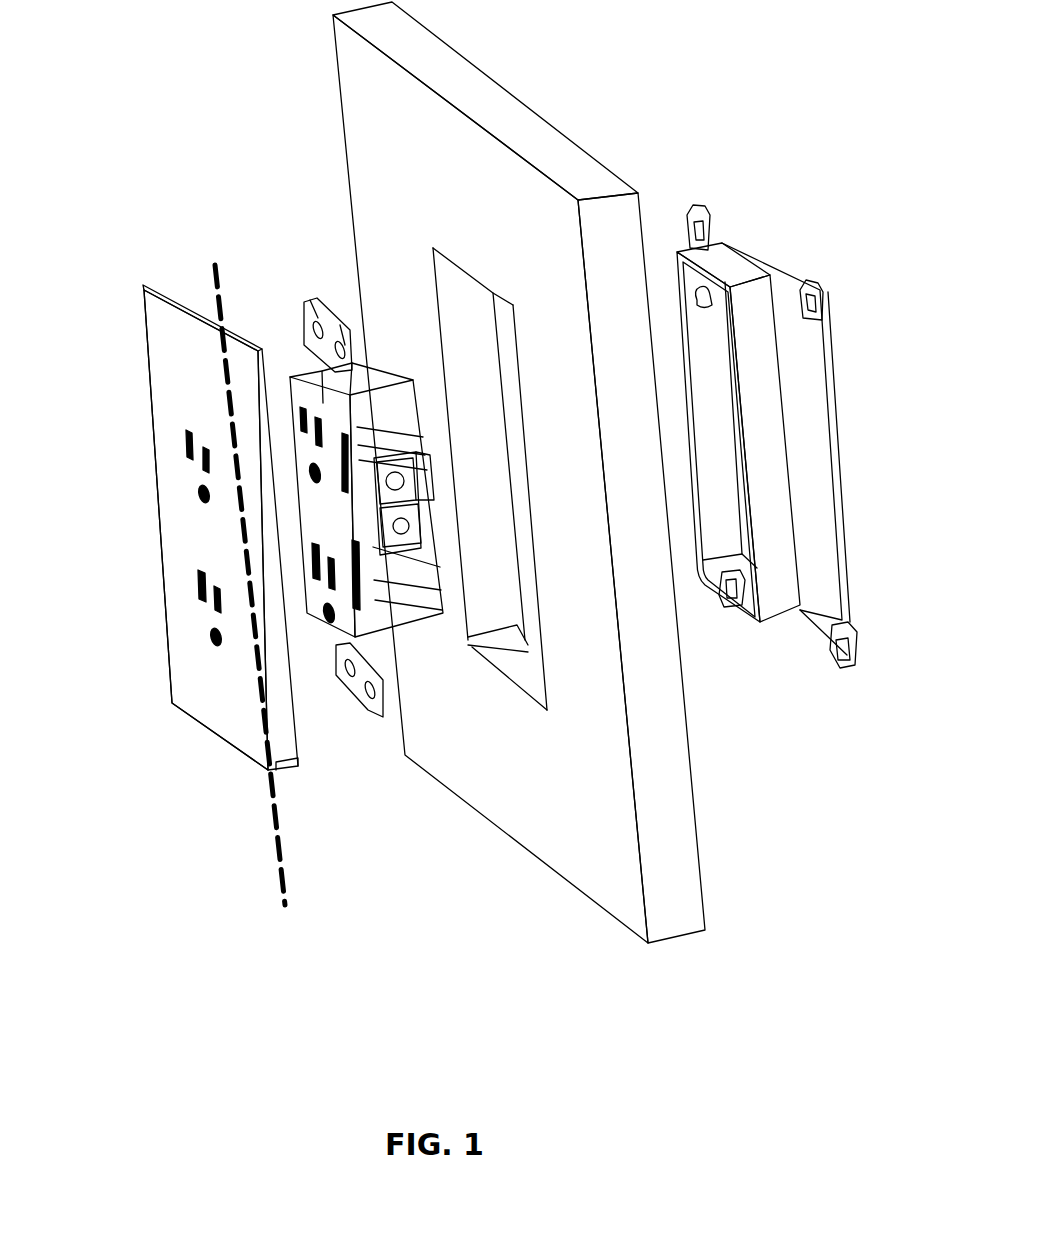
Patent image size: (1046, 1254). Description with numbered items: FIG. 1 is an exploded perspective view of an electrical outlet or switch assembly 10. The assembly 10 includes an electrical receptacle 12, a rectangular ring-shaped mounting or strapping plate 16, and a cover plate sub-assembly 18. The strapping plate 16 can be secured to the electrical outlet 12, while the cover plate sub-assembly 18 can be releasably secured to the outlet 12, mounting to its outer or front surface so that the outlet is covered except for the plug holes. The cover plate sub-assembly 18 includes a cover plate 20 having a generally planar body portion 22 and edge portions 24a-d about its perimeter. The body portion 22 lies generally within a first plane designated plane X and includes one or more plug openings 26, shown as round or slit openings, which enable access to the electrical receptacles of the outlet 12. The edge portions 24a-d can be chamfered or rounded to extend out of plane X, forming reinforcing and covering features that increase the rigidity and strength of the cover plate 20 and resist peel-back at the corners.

The electrical outlet assembly 10 is at (675, 82).
The electrical receptacle 12 is at (296, 276).
The rectangular ring-shaped mounting or strapping plate 16 is at (724, 170).
The cover plate sub-assembly 18 is at (103, 288).
The cover plate 20 is at (124, 430).
The body portion 22 is at (186, 542).
The edge portions 24a-d is at (158, 310).
The plug openings 26 is at (191, 587).